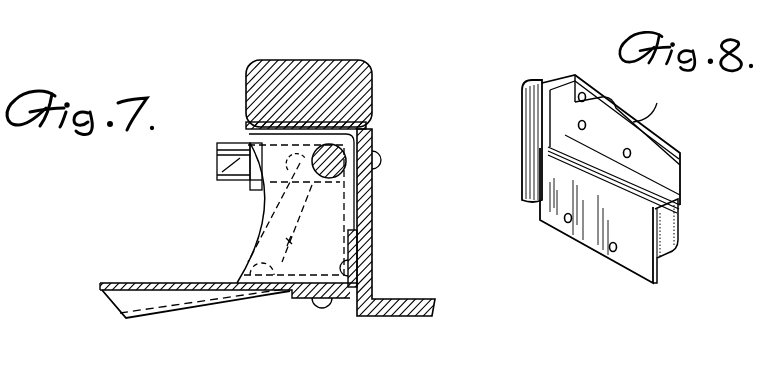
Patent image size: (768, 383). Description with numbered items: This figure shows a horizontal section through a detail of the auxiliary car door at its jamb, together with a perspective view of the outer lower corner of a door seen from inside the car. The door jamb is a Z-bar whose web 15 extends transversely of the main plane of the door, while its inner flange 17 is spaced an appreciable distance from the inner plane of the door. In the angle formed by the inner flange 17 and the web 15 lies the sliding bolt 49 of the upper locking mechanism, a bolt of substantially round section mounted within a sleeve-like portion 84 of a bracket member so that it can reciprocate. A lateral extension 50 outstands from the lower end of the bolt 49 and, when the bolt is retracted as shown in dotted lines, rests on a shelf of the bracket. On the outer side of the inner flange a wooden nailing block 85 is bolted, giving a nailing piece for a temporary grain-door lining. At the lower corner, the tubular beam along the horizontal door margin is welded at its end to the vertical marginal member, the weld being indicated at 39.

In FIG. 7, the wooden nailing block 85 is at (303, 78).
In FIG. 7, the inner flange 17 is at (246, 128).
In FIG. 7, the sliding bolt 49 is at (336, 158).
In FIG. 7, the lateral extension 50 is at (218, 178).
In FIG. 7, the sleeve-like portion 84 is at (373, 201).
In FIG. 7, the web 15 is at (373, 226).
In FIG. 8, the weld 39 is at (540, 170).